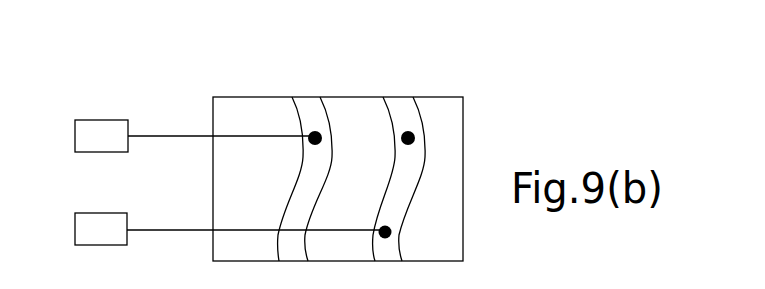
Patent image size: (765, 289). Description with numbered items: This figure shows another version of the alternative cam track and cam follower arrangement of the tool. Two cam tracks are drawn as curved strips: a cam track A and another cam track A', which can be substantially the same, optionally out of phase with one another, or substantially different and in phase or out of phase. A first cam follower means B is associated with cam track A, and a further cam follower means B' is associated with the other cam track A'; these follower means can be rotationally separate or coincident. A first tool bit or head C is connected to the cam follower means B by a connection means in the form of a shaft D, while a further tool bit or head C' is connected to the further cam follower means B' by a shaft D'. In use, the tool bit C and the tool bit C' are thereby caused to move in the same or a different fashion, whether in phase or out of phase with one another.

The cam track A is at (308, 158).
The further cam track A' is at (405, 158).
The cam follower means B is at (339, 138).
The further cam follower means B' is at (415, 229).
The tool bit or head C is at (103, 120).
The further tool bit or head C' is at (106, 213).
The shaft D is at (221, 112).
The further shaft D' is at (256, 206).